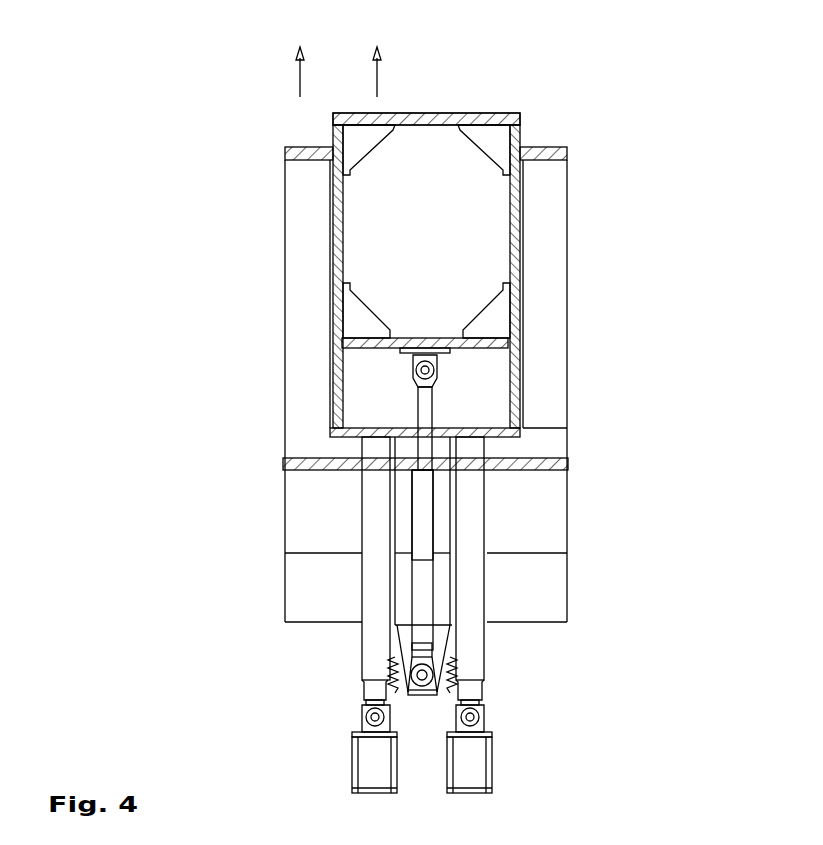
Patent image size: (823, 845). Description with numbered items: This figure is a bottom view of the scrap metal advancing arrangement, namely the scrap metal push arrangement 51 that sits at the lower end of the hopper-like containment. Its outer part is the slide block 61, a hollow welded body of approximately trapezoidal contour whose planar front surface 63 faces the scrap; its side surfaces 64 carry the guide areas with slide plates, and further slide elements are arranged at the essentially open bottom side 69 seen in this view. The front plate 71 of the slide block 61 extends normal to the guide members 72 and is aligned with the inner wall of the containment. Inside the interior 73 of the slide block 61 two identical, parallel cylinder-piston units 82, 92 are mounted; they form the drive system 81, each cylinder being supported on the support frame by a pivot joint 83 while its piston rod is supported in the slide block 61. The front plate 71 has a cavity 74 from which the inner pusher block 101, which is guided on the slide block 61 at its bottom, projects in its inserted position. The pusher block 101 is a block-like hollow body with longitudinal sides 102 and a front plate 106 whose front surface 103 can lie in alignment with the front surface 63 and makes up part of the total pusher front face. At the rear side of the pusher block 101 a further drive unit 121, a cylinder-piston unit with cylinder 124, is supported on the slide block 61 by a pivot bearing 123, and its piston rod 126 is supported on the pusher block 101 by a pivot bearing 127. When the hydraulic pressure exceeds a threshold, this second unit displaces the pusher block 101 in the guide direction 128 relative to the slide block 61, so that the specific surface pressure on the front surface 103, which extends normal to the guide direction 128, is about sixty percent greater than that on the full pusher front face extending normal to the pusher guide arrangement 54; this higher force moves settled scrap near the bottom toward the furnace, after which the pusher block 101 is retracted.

The scrap metal push arrangement 51 is at (262, 484).
The pusher guide arrangement 54 is at (300, 78).
The slide block 61 is at (553, 187).
The front surface 63 is at (537, 150).
The side surfaces 64 is at (567, 242).
The bottom side 69 is at (543, 282).
The front plate 71 is at (300, 152).
The guide member 72 is at (330, 203).
The interior 73 is at (310, 240).
The cavity 74 is at (335, 150).
The drive system 81 is at (496, 710).
The drive unit 82 is at (376, 645).
The pivot joint 83 is at (367, 717).
The cylinder piston unit 92 is at (468, 670).
The pusher block 101 is at (522, 223).
The longitudinal sides 102 is at (520, 132).
The front surface 103 is at (465, 113).
The front plate 106 is at (403, 113).
The drive unit 121 is at (425, 540).
The pivot bearing 123 is at (430, 668).
The cylinder 124 is at (422, 502).
The piston rod 126 is at (425, 410).
The pivot bearing 127 is at (437, 370).
The guide direction 128 is at (377, 80).